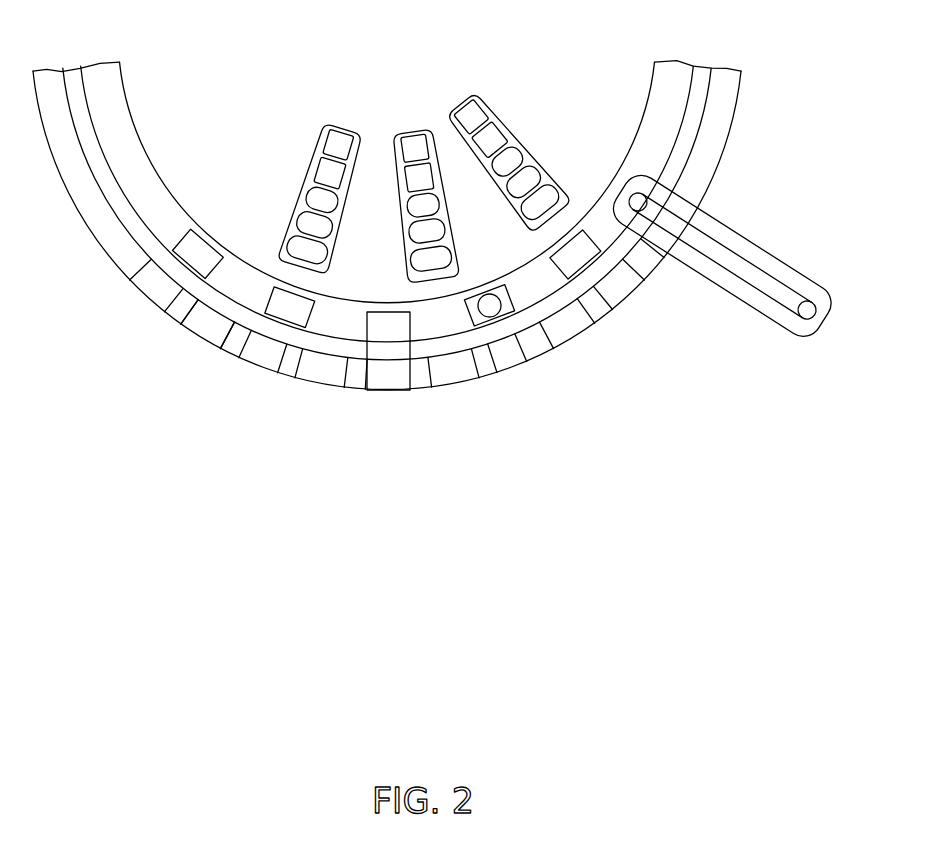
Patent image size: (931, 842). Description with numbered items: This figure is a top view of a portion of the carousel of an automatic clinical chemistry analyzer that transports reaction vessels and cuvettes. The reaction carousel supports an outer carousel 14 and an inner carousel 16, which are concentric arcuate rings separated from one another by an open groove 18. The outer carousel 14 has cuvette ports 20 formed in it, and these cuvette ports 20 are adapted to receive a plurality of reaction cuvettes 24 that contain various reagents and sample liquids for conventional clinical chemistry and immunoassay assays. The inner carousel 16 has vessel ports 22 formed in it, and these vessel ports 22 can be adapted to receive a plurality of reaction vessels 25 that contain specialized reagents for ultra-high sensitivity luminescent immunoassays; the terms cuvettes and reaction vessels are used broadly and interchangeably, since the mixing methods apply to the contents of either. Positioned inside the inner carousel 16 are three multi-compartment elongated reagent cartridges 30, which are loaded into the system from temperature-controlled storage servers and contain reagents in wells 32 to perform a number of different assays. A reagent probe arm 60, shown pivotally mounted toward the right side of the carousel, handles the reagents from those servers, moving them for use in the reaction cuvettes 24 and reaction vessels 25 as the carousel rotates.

The outer carousel 14 is at (648, 267).
The inner carousel 16 is at (243, 275).
The open groove 18 is at (695, 135).
The cuvette ports 20 is at (142, 295).
The vessel ports 22 is at (383, 342).
The reaction cuvettes 24 is at (203, 328).
The reaction vessels 25 is at (490, 312).
The reagent cartridges 30 is at (461, 144).
The wells 32 is at (512, 158).
The reagent probe arm 60 is at (767, 323).